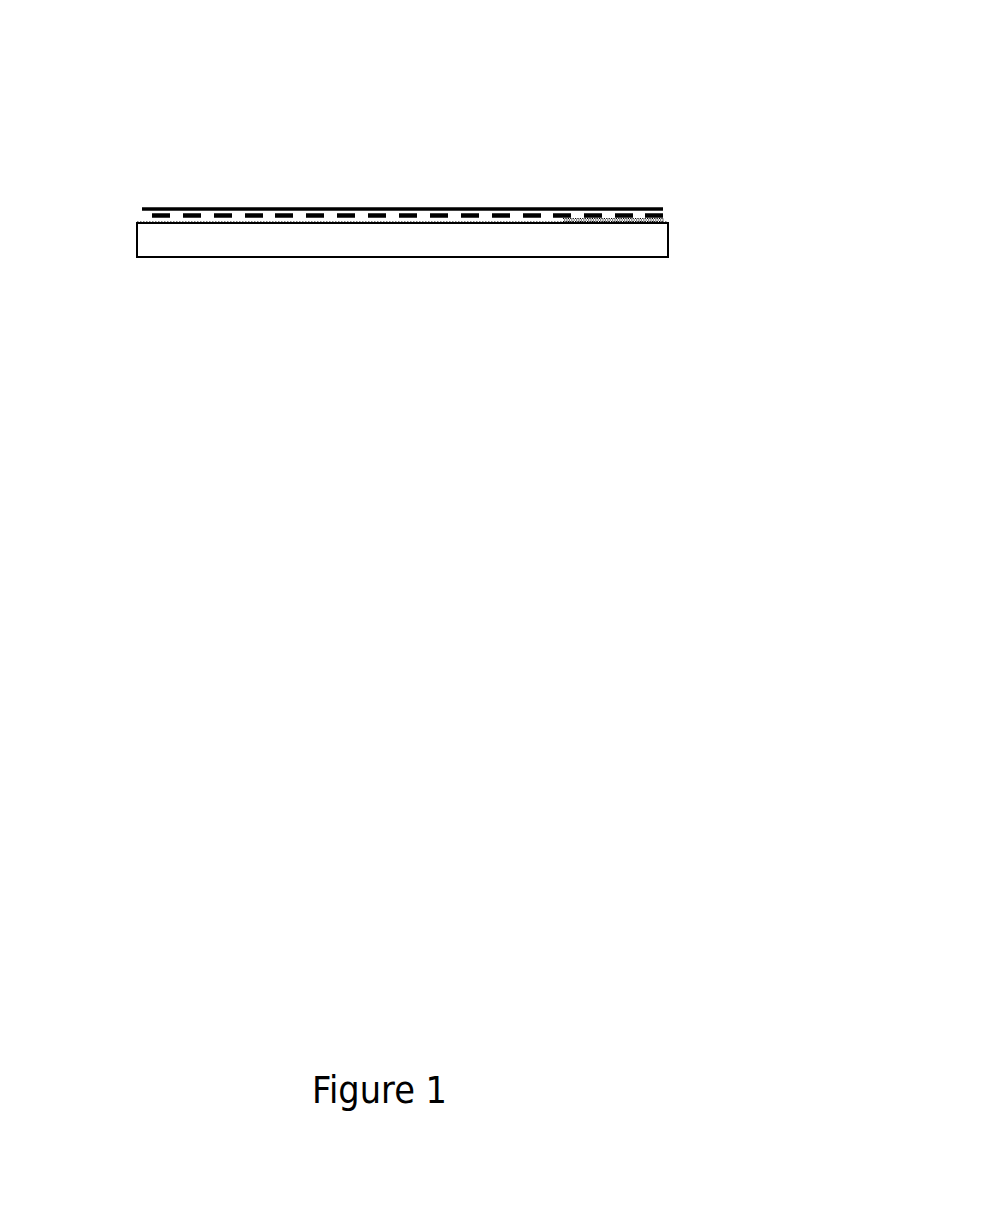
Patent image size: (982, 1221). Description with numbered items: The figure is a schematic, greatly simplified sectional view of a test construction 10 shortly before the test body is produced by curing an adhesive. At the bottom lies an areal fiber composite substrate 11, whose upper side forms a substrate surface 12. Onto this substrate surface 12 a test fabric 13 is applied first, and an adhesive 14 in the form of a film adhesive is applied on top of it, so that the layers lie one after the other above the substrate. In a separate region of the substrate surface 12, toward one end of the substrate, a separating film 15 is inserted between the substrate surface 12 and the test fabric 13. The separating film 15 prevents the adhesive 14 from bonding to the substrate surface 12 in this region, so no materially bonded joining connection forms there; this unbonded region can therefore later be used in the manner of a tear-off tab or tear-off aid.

The test construction 10 is at (670, 133).
The fiber composite substrate 11 is at (647, 258).
The substrate surface 12 is at (142, 220).
The test fabric 13 is at (277, 215).
The adhesive 14 is at (420, 207).
The separating film 15 is at (668, 220).